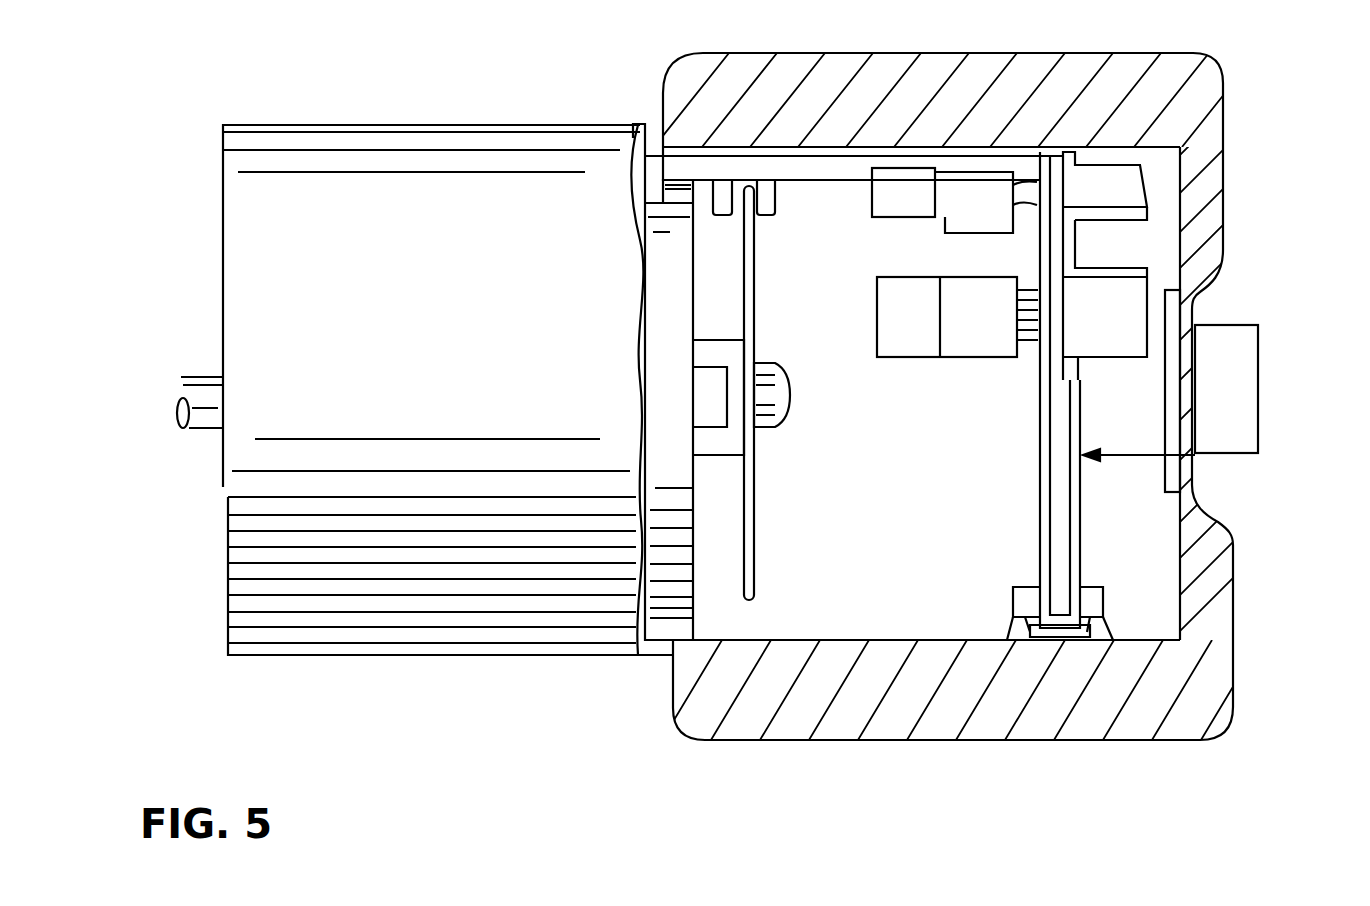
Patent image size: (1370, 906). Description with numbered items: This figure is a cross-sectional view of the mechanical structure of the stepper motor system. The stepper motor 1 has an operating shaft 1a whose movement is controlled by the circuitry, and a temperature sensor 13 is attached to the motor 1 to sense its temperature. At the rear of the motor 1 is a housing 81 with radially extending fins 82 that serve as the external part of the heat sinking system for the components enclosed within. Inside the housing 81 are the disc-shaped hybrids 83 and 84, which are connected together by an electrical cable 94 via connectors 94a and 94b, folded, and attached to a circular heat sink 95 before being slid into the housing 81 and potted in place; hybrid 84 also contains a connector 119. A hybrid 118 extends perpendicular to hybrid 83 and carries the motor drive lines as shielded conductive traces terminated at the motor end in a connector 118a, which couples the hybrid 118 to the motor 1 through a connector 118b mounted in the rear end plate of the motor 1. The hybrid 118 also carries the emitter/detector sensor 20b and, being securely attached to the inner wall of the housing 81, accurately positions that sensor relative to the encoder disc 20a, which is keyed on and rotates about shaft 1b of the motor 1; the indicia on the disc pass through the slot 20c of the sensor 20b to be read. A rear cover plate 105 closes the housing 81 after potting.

The stepper motor 1 is at (400, 625).
The operating shaft 1a is at (190, 393).
The shaft 1b is at (770, 388).
The temperature sensor 13 is at (634, 128).
The encoder disc 20a is at (755, 318).
The emitter/detector sensor 20b is at (775, 215).
The slot 20c is at (732, 215).
The housing 81 is at (833, 625).
The fins 82 is at (1055, 53).
The hybrid 83 is at (1040, 465).
The hybrid 84 is at (1082, 515).
The electrical cable 94 is at (1050, 630).
The connector 94a is at (1010, 638).
The connector 94b is at (1098, 630).
The heat sink 95 is at (1117, 190).
The rear cover plate 105 is at (1235, 625).
The hybrid 118 is at (837, 167).
The connector 118a is at (737, 152).
The connector 118b is at (662, 146).
The connector 119 is at (1245, 352).